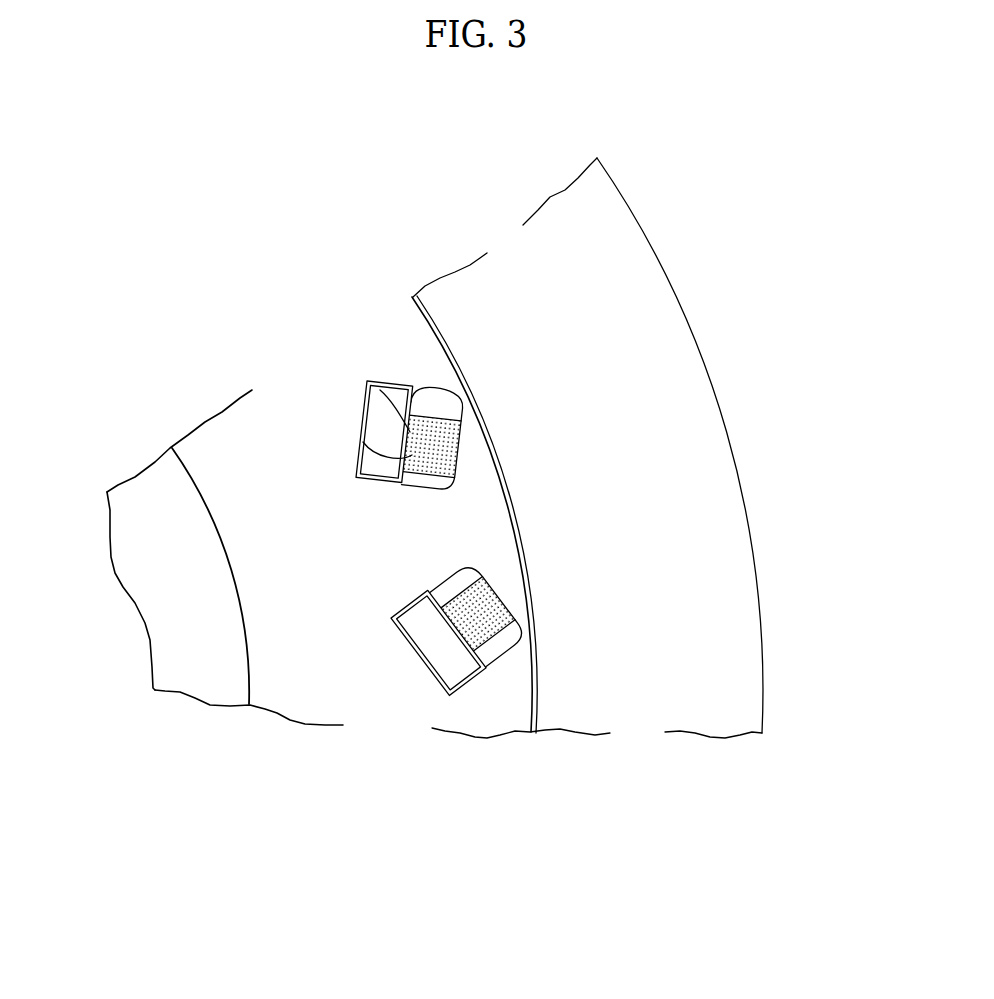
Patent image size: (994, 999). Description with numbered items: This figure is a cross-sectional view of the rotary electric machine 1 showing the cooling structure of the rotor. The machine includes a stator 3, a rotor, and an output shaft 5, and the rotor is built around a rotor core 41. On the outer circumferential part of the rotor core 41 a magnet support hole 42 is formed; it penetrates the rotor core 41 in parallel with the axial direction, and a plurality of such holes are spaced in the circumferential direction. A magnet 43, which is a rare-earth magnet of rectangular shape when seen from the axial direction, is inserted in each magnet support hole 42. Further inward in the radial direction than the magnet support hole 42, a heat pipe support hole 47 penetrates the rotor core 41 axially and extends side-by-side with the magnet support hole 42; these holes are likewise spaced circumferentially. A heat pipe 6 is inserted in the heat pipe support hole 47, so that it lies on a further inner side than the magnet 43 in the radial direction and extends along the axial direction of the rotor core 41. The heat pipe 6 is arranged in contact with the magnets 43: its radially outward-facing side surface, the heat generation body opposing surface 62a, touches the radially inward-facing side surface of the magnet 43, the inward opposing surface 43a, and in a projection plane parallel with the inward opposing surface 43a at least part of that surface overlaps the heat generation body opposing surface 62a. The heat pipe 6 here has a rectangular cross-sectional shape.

The rotary electric machine 1 is at (695, 192).
The stator 3 is at (500, 212).
The output shaft 5 is at (212, 663).
The heat pipe 6 is at (397, 630).
The rotor core 41 is at (238, 437).
The magnet support hole 42 is at (430, 495).
The magnet 43 is at (367, 382).
The inward opposing surface 43a is at (392, 400).
The heat pipe support hole 47 is at (370, 490).
The heat generation body opposing surface 62a is at (363, 442).